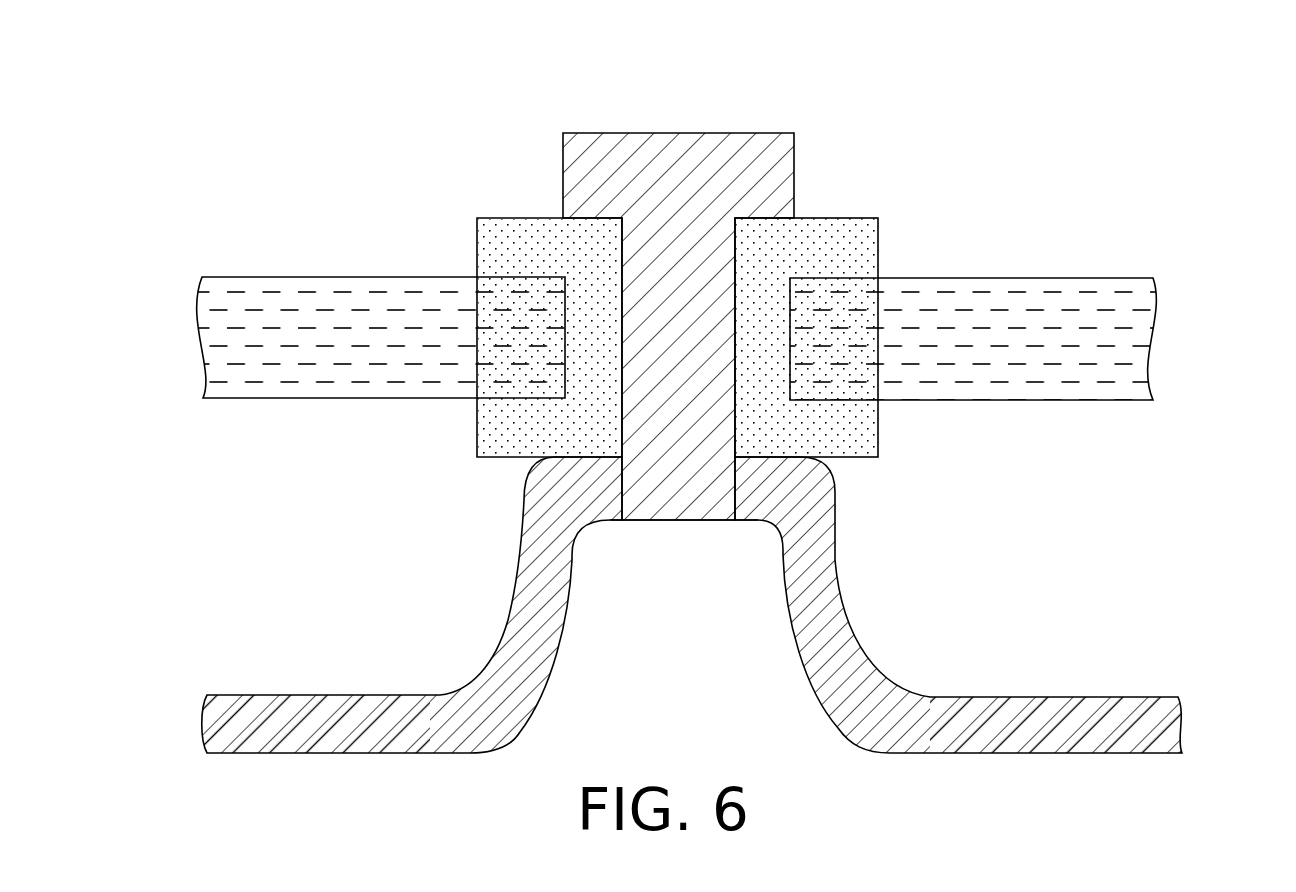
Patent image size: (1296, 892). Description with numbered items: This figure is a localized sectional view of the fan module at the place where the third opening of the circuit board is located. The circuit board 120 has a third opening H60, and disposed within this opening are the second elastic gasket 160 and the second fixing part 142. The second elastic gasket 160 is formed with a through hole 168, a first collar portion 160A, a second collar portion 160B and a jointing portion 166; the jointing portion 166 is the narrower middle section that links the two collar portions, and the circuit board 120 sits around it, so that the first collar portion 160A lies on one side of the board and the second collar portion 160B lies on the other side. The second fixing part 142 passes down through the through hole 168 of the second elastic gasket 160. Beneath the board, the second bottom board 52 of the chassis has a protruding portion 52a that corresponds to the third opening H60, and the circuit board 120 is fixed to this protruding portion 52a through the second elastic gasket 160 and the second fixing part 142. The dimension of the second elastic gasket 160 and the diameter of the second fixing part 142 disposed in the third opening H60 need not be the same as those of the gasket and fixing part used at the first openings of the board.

The second bottom board 52 is at (1148, 727).
The protruding portion 52a is at (758, 502).
The circuit board 120 is at (1130, 352).
The second fixing part 142 is at (650, 150).
The second elastic gasket 160 is at (543, 402).
The first collar portion 160A is at (583, 424).
The second collar portion 160B is at (573, 245).
The jointing portion 166 is at (590, 355).
The through hole 168 is at (740, 418).
The third opening H60 is at (795, 338).